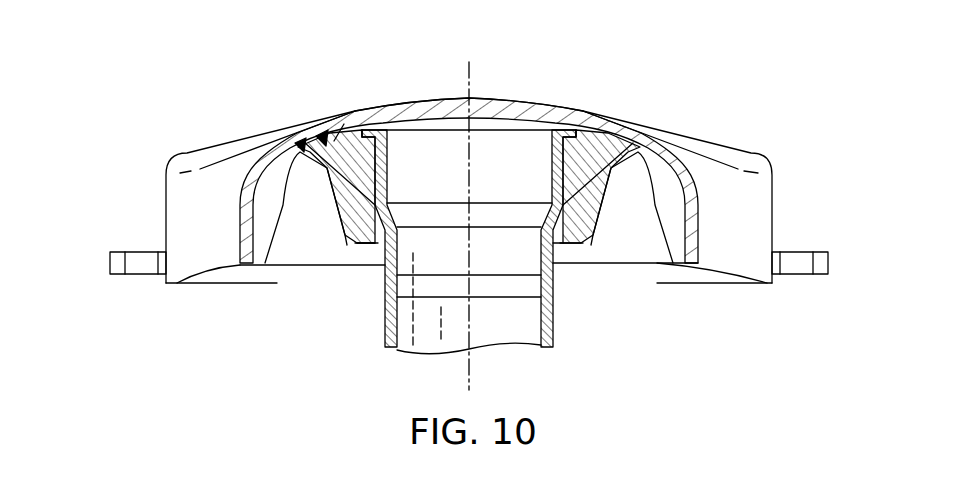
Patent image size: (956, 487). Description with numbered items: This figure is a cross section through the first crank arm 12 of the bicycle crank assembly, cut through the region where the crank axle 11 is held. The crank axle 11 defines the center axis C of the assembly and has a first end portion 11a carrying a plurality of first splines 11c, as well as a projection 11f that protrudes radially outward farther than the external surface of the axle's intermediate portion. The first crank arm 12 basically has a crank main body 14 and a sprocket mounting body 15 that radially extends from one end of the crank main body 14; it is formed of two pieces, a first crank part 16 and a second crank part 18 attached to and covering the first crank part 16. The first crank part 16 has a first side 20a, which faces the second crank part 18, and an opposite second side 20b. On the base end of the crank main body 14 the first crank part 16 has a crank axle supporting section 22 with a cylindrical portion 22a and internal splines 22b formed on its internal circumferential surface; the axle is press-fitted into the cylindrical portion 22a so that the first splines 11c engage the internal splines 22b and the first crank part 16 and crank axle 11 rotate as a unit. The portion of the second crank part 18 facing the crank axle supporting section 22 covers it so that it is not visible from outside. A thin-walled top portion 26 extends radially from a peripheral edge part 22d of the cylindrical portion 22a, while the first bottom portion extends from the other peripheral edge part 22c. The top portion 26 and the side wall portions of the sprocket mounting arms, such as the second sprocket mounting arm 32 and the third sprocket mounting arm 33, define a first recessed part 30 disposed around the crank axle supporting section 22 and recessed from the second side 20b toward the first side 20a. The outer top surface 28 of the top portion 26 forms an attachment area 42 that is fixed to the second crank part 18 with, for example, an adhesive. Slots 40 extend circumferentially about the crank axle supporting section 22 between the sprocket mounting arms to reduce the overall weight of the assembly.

The crank axle 11 is at (569, 335).
The first end portion 11a is at (578, 179).
The first splines 11c is at (611, 248).
The projection 11f is at (370, 124).
The first crank arm 12 is at (201, 132).
The crank main body 14 is at (363, 324).
The sprocket mounting body 15 is at (141, 195).
The first crank part 16 is at (348, 249).
The second crank part 18 is at (418, 94).
The first side 20a is at (531, 83).
The second side 20b is at (645, 319).
The crank axle supporting section 22 is at (322, 266).
The cylindrical portion 22a is at (360, 248).
The internal splines 22b is at (389, 143).
The peripheral edge part 22c is at (558, 262).
The peripheral edge part 22d is at (586, 130).
The top portion 26 is at (301, 138).
The outer top surface 28 is at (342, 124).
The first recessed part 30 is at (319, 187).
The second sprocket mounting arm 32 is at (118, 289).
The third sprocket mounting arm 33 is at (823, 289).
The slots 40 is at (266, 240).
The attachment area 42 is at (323, 131).
The center axis C is at (471, 75).